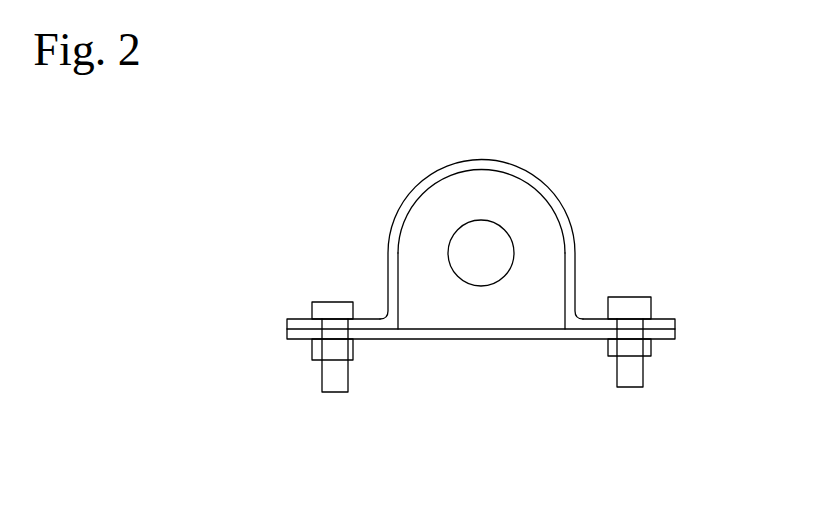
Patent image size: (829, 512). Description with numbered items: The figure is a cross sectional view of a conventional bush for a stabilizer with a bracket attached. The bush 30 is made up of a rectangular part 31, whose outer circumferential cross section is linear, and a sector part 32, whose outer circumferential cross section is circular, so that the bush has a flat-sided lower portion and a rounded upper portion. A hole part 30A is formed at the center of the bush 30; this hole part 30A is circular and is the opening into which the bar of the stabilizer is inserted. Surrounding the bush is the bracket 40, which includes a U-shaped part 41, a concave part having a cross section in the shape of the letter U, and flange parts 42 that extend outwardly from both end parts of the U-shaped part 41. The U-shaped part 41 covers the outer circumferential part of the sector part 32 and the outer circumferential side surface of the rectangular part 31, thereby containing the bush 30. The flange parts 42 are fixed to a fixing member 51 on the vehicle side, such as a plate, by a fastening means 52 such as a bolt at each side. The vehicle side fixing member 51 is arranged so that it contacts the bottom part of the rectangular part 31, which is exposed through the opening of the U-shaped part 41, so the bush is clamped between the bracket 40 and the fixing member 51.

The bush 30 is at (407, 148).
The rectangular part 31 is at (425, 287).
The sector part 32 is at (430, 213).
The hole part 30A is at (473, 285).
The bracket 40 is at (693, 197).
The U-shaped part 41 is at (568, 237).
The flange parts 42 is at (660, 318).
The fixing member 51 is at (382, 335).
The fastening means 52 is at (332, 310).